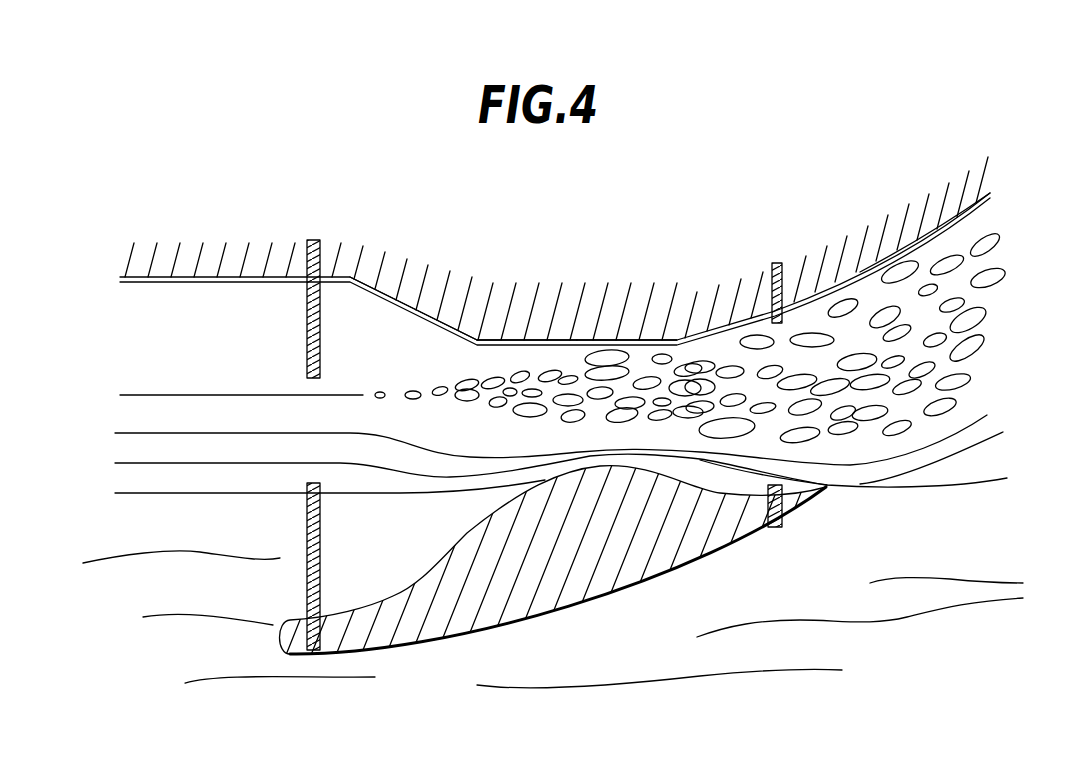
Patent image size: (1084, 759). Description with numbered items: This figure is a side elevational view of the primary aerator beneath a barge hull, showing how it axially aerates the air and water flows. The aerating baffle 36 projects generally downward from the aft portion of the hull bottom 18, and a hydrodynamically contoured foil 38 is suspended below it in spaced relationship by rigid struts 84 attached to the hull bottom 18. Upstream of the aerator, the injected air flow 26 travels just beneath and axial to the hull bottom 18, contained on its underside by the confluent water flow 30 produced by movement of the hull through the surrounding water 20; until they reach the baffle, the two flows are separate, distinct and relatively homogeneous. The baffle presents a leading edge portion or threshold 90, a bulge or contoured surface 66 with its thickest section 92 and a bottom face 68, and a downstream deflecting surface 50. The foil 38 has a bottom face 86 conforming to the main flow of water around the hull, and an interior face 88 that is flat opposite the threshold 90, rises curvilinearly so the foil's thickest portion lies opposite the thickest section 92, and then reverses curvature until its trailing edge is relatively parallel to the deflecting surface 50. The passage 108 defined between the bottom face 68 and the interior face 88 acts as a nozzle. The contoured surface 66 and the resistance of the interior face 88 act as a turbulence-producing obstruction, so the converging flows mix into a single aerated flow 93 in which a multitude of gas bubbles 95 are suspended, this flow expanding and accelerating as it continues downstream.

The hull bottom 18 is at (187, 262).
The water 20 is at (147, 596).
The air flow 26 is at (150, 373).
The water flow 30 is at (108, 434).
The aerating baffle 36 is at (586, 233).
The foil 38 is at (570, 594).
The deflecting surface 50 is at (943, 228).
The contoured surface 66 is at (597, 297).
The bottom face 68 is at (485, 315).
The rigid struts 84 is at (307, 326).
The bottom face 86 is at (410, 645).
The interior face 88 is at (468, 531).
The threshold 90 is at (408, 305).
The thickest section 92 is at (540, 345).
The aerated flow 93 is at (966, 409).
The gas bubbles 95 is at (870, 387).
The passage 108 is at (662, 438).